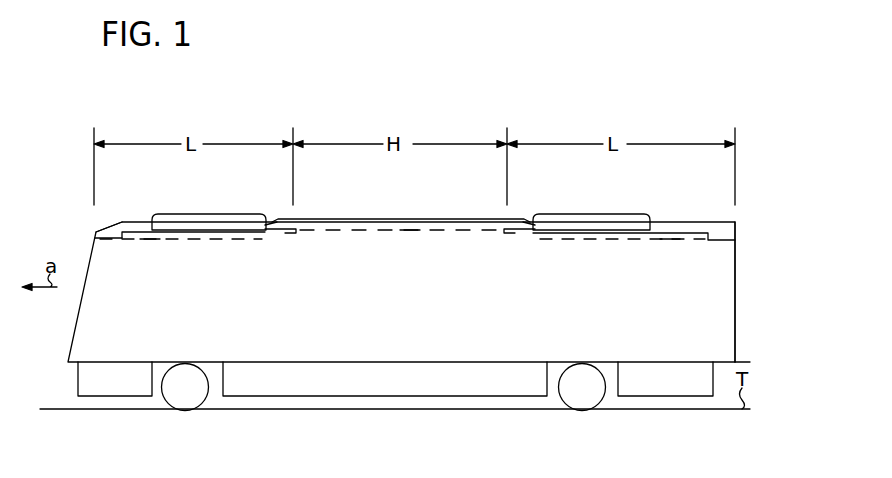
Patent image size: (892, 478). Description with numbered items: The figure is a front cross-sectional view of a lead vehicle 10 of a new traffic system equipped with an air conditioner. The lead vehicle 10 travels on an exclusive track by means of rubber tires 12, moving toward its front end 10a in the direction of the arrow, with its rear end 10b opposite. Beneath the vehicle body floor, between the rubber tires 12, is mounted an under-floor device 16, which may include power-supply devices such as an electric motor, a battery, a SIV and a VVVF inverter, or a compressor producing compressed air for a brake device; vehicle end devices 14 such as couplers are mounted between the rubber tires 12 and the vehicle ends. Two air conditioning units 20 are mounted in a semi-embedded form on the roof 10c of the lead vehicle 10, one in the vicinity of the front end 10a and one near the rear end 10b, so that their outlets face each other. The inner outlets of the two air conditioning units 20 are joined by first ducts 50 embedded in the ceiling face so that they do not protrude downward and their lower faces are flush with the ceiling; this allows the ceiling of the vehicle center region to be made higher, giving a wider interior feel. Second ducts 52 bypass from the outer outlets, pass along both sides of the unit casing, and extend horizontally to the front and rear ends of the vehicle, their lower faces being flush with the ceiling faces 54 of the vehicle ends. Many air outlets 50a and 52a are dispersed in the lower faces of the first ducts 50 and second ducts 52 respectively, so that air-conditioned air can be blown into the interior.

The lead vehicle 10 is at (427, 189).
The front end 10a is at (88, 258).
The rear end 10b is at (737, 266).
The roof 10c is at (323, 221).
The rubber tires 12 is at (186, 400).
The vehicle end devices 14 is at (113, 390).
The under-floor device 16 is at (371, 398).
The air conditioning units 20 is at (174, 213).
The first ducts 50 is at (375, 233).
The air outlets 50a is at (408, 233).
The second ducts 52 is at (175, 241).
The air outlets 52a is at (155, 243).
The ceiling faces 54 is at (107, 240).